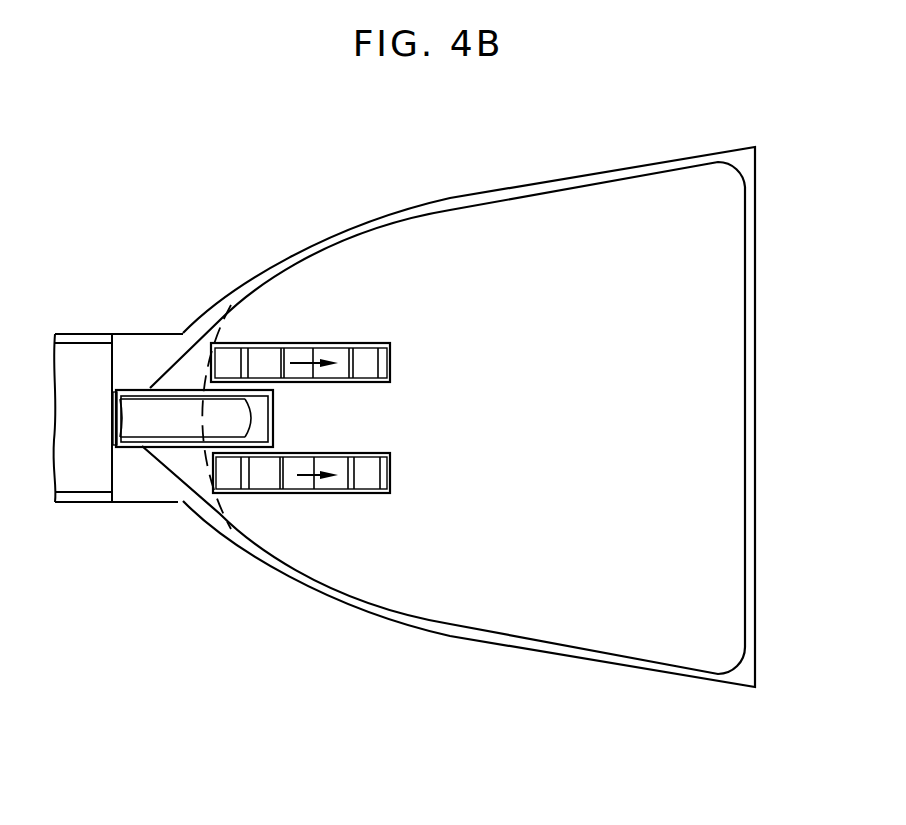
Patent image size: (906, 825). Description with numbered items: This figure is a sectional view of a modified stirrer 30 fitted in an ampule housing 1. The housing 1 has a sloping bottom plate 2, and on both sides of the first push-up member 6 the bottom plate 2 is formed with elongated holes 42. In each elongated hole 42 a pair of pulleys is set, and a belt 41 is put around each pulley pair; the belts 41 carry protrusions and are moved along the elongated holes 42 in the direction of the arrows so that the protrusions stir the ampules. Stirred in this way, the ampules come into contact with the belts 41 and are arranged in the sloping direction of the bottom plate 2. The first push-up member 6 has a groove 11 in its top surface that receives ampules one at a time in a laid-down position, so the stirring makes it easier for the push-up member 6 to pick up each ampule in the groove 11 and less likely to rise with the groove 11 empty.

The ampule housing 1 is at (578, 181).
The bottom plate 2 is at (593, 412).
The first push-up member 6 is at (150, 388).
The groove 11 is at (175, 423).
The stirrer 30 is at (283, 334).
The belt 41 is at (366, 362).
The elongated hole 42 is at (363, 346).